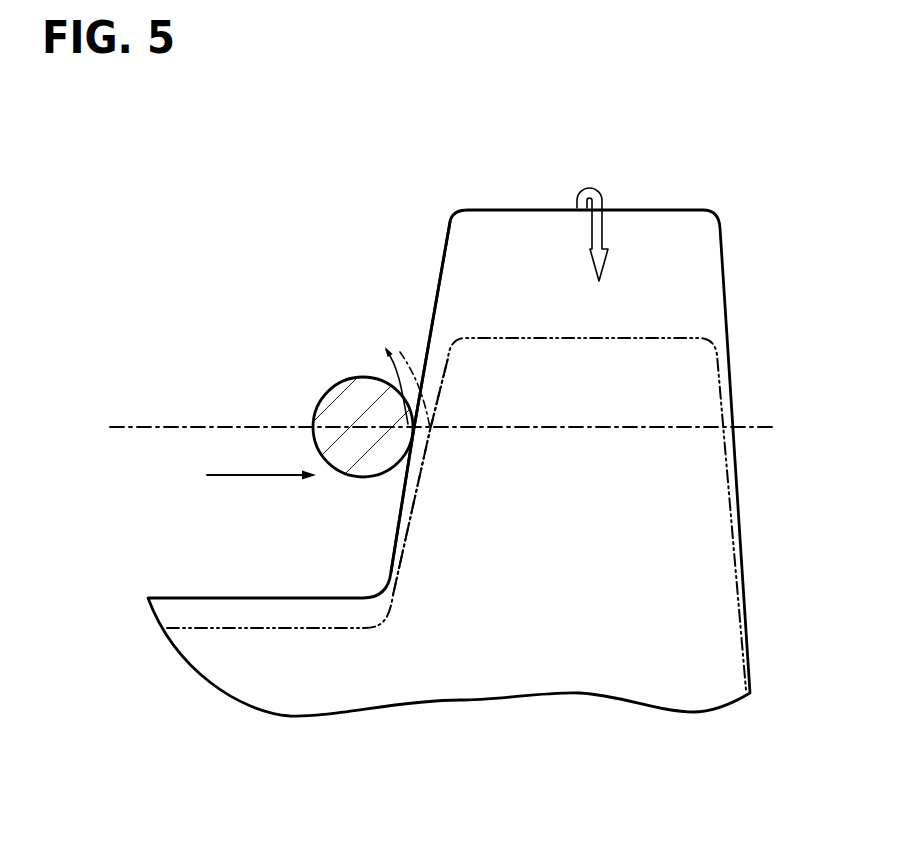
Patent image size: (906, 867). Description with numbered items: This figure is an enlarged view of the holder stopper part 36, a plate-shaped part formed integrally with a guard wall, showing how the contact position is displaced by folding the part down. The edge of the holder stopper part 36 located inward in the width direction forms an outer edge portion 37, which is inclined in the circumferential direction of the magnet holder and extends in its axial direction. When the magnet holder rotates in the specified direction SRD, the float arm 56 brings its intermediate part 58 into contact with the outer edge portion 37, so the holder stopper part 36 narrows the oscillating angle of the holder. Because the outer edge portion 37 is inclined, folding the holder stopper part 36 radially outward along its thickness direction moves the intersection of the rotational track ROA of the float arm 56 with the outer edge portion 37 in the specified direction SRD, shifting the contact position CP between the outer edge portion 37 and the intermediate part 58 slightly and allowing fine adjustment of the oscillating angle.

The holder stopper part 36 is at (663, 210).
The outer edge portion 37 is at (444, 258).
The float arm 56 is at (326, 380).
The intermediate part 58 is at (330, 387).
The contact position CP is at (394, 375).
The rotational track ROA is at (118, 428).
The specified direction SRD is at (220, 477).